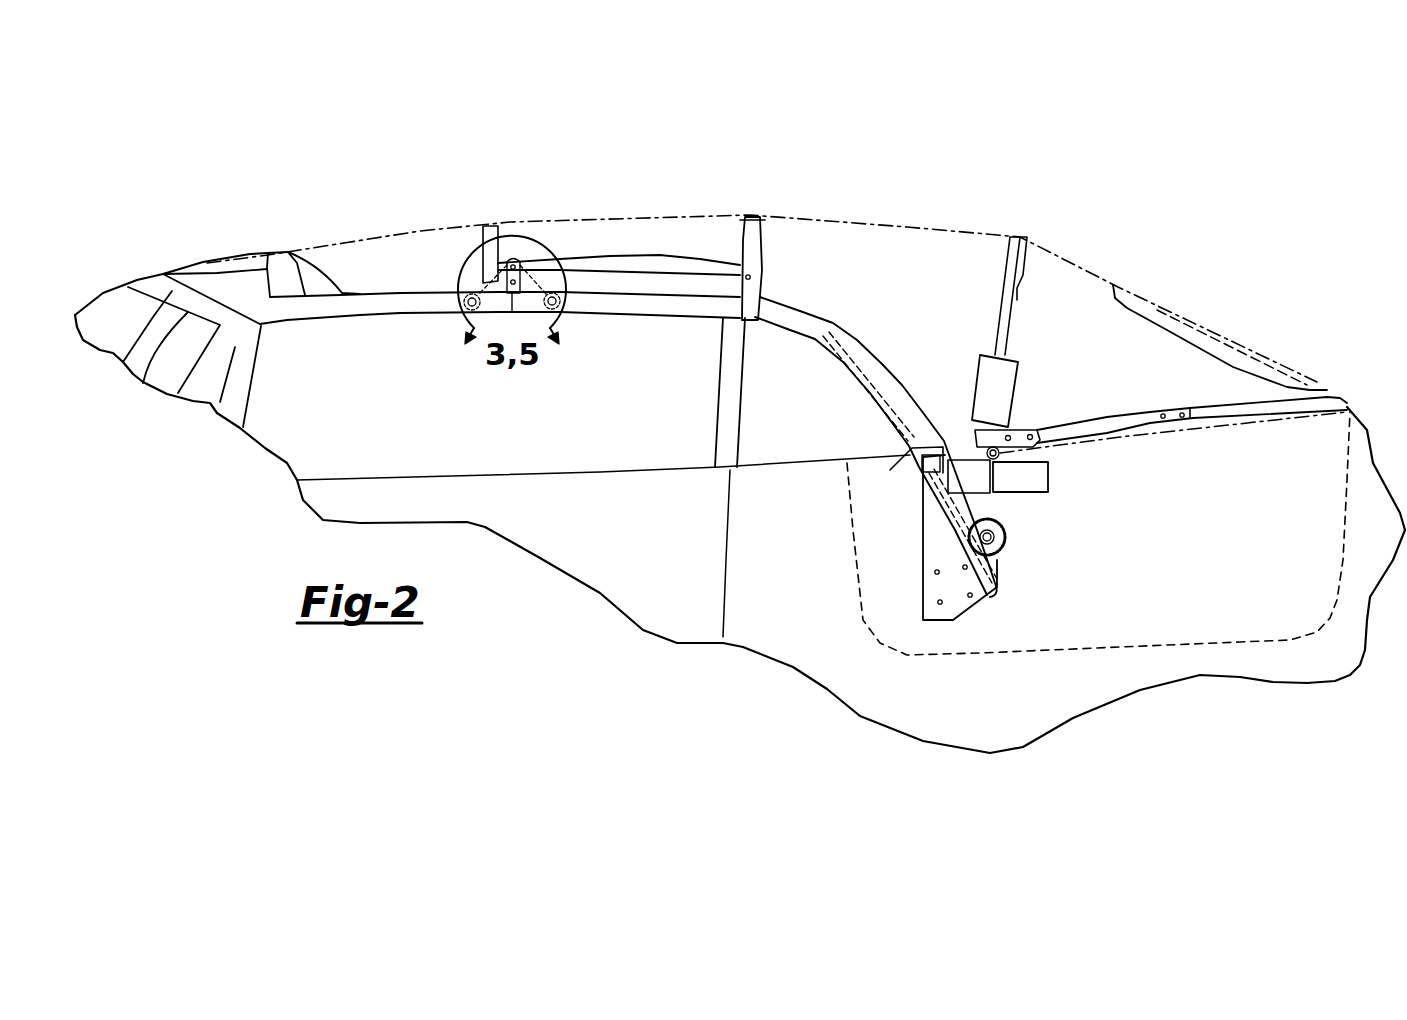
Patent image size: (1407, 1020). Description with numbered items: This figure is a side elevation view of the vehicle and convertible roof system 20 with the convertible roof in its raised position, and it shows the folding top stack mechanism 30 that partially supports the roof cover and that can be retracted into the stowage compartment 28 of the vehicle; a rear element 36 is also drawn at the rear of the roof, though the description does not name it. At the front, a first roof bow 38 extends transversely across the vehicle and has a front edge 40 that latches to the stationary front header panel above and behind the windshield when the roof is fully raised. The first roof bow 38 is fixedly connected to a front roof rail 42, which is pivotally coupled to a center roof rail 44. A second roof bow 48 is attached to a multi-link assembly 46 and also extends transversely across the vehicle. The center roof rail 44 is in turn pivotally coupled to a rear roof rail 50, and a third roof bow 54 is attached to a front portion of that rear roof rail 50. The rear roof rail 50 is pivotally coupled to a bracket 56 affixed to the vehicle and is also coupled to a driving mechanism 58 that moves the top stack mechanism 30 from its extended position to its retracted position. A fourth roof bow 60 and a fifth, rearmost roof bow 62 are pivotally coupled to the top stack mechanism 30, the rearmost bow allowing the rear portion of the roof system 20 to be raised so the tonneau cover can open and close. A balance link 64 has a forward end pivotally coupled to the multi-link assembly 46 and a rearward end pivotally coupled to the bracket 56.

The convertible roof system 20 is at (824, 176).
The stowage compartment 28 is at (1125, 648).
The top stack mechanism 30 is at (713, 441).
The rear deck / tonneau 36 is at (1163, 313).
The first roof bow 38 is at (288, 252).
The front edge 40 is at (120, 366).
The front roof rail 42 is at (312, 312).
The center roof rail 44 is at (673, 303).
The multi-link assembly 46 is at (520, 220).
The second roof bow 48 is at (488, 243).
The rear roof rail 50 is at (807, 327).
The third roof bow 54 is at (757, 218).
The bracket 56 is at (923, 589).
The driving mechanism 58 is at (1062, 482).
The fourth roof bow 60 is at (1014, 237).
The fifth roof bow 62 is at (1327, 400).
The balance link 64 is at (670, 262).